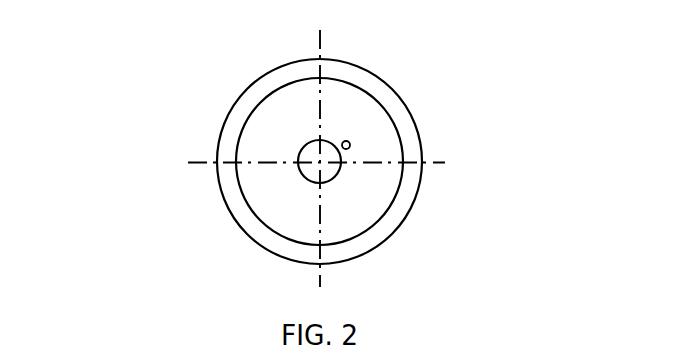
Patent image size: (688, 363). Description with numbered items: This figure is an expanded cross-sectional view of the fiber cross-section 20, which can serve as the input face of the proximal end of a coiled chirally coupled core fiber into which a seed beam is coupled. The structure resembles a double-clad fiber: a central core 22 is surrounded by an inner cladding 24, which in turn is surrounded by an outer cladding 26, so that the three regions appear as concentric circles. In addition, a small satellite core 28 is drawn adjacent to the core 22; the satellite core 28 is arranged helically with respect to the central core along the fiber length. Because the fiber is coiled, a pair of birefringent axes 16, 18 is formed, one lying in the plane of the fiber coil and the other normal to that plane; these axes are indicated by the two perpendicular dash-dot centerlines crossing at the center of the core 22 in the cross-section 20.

The birefringent axis 16 is at (205, 163).
The birefringent axis 18 is at (320, 48).
The fiber cross-section 20 is at (529, 126).
The core 22 is at (330, 170).
The inner cladding 24 is at (293, 112).
The outer cladding 26 is at (232, 133).
The satellite core 28 is at (350, 145).